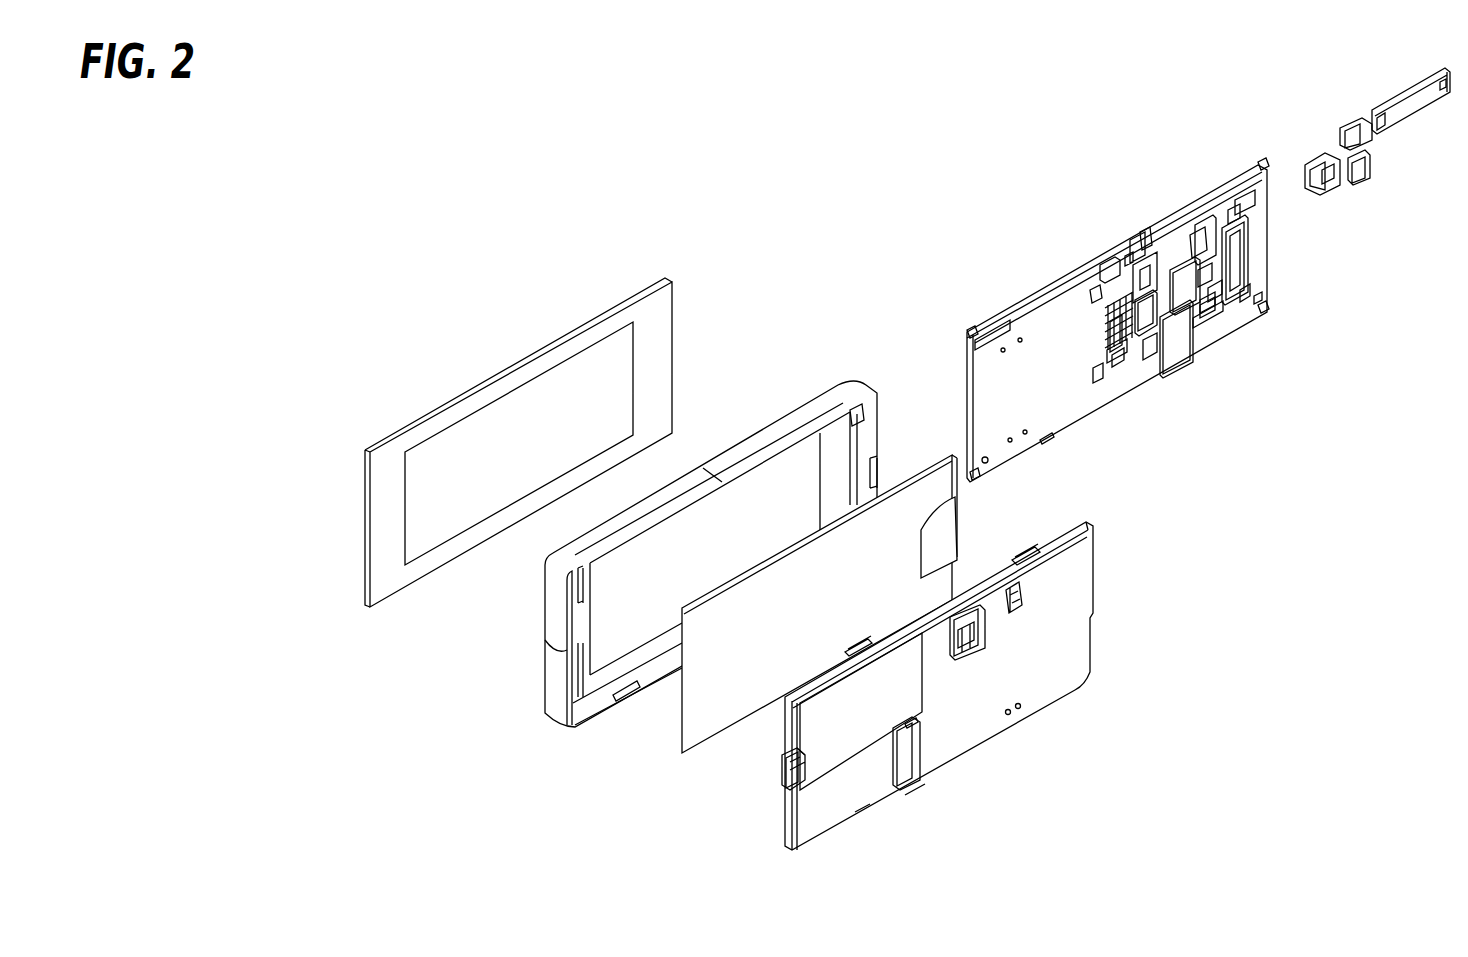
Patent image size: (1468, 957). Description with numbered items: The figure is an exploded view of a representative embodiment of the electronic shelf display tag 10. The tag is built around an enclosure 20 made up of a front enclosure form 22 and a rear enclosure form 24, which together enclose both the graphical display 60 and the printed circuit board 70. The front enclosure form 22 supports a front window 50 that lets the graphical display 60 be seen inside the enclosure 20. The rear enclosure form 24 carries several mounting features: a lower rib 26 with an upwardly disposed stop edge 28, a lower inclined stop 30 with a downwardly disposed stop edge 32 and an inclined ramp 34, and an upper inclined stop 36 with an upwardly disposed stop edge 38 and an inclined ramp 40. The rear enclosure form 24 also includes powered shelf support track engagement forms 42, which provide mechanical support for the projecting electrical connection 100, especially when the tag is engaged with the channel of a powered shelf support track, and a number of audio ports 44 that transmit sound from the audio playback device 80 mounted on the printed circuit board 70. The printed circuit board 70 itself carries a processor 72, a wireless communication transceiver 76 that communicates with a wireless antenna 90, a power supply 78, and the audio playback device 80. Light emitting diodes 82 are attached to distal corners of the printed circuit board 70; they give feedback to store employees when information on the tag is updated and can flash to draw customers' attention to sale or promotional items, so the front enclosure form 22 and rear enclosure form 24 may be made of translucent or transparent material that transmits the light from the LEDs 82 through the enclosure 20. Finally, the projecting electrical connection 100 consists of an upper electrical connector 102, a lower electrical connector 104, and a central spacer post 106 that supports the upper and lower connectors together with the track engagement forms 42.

The electronic shelf display tag 10 is at (330, 60).
The enclosure 20 is at (671, 627).
The front enclosure form 22 is at (552, 645).
The rear enclosure form 24 is at (920, 708).
The lower rib 26 is at (898, 760).
The upwardly disposed stop edge 28 is at (907, 722).
The lower inclined stop 30 is at (800, 778).
The downwardly disposed stop edge 32 is at (798, 777).
The inclined ramp 34 is at (798, 767).
The upper inclined stop 36 is at (1020, 590).
The upwardly disposed stop edge 38 is at (1015, 585).
The inclined ramp 40 is at (1018, 602).
The powered shelf support track engagement forms 42 is at (985, 628).
The audio ports 44 is at (1020, 707).
The front window 50 is at (518, 442).
The graphical display 60 is at (819, 604).
The printed circuit board 70 is at (1121, 309).
The processor 72 is at (1186, 285).
The wireless communication transceiver 76 is at (1203, 250).
The power supply 78 is at (1142, 310).
The audio playback device 80 is at (1178, 337).
The light emitting diodes 82 is at (976, 476).
The wireless antenna 90 is at (1417, 105).
The projecting electrical connection 100 is at (1342, 156).
The upper electrical connector 102 is at (1355, 125).
The lower electrical connector 104 is at (1363, 172).
The central spacer post 106 is at (1317, 178).